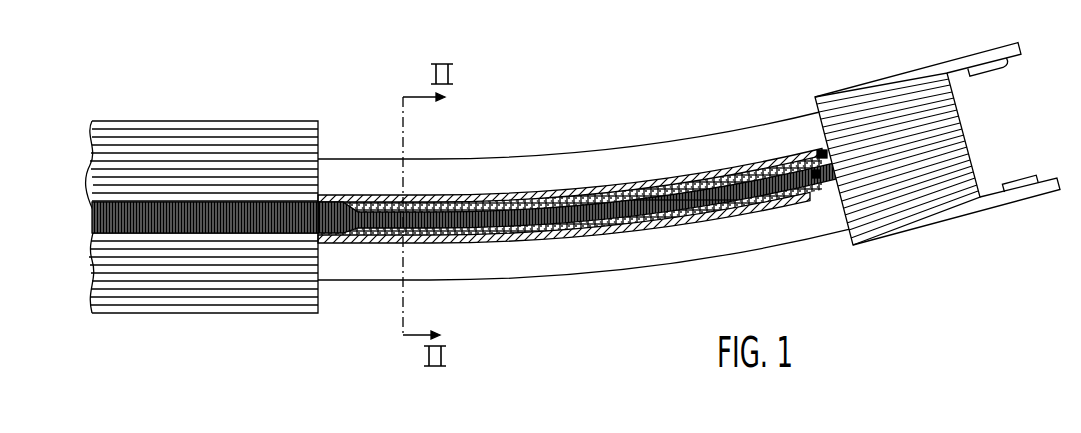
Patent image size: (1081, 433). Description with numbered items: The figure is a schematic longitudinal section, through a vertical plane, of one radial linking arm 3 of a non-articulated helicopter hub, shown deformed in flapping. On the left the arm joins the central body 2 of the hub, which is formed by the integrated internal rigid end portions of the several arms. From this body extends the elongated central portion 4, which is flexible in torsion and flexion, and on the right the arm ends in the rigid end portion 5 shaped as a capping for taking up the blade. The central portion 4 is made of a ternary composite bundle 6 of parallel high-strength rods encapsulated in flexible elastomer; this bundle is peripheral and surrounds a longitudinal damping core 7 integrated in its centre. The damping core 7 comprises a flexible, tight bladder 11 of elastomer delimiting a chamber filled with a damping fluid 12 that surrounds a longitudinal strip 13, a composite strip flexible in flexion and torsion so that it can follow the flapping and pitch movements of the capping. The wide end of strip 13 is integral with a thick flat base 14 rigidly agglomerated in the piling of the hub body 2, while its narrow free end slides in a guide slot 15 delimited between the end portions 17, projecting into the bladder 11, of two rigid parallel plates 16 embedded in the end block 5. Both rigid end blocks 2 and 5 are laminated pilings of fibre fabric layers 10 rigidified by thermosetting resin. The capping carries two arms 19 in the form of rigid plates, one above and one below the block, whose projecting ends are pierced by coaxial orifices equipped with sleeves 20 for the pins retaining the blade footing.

The central body 2 is at (232, 318).
The linking arm 3 is at (508, 280).
The elongated central portion 4 is at (585, 276).
The rigid end portion 5 is at (931, 231).
The ternary composite bundle 6 is at (447, 187).
The longitudinal damping core 7 is at (548, 186).
The layers 10 is at (877, 132).
The flexible tight bladder 11 is at (496, 192).
The damping fluid 12 is at (633, 188).
The longitudinal strip 13 is at (672, 216).
The flat base 14 is at (256, 216).
The guide slot 15 is at (822, 157).
The rigid parallel plates 16 is at (959, 147).
The end portions 17 is at (836, 194).
The arms 19 is at (919, 70).
The sleeves 20 is at (1030, 176).